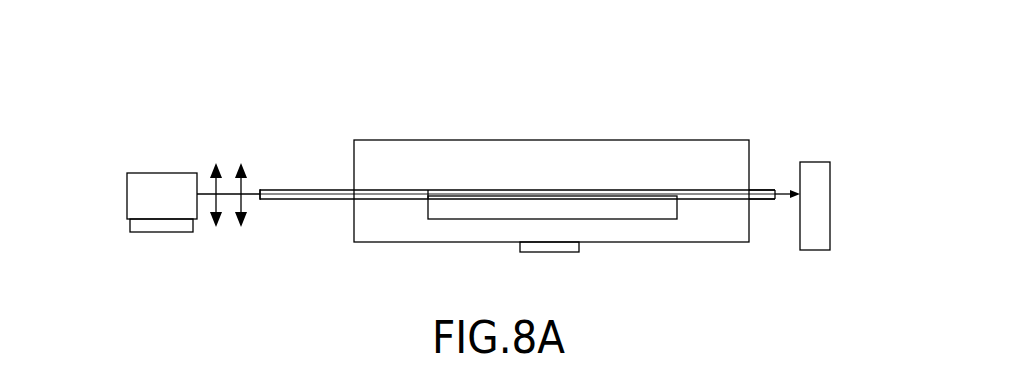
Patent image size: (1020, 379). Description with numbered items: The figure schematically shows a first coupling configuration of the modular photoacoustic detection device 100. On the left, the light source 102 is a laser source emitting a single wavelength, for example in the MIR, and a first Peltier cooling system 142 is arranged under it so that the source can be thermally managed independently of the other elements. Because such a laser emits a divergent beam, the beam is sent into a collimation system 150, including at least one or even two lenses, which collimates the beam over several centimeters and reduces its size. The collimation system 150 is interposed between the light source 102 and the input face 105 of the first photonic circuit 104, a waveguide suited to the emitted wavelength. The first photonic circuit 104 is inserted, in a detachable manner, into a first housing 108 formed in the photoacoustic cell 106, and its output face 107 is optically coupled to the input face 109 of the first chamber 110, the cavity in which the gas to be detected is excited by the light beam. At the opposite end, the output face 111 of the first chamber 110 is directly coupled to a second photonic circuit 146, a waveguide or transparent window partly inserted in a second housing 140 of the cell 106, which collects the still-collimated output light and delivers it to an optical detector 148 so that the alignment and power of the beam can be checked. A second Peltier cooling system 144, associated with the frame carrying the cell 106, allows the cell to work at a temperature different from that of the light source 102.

The modular photoacoustic detection device 100 is at (847, 125).
The light source 102 is at (134, 185).
The first photonic circuit 104 is at (313, 188).
The input face 105 is at (258, 188).
The photoacoustic cell 106 is at (576, 153).
The output face 107 is at (430, 196).
The first housing 108 is at (383, 185).
The input face of the first chamber 109 is at (431, 197).
The first chamber 110 is at (643, 202).
The output face of the first chamber 111 is at (671, 197).
The second housing 140 is at (720, 185).
The first Peltier cooling system 142 is at (134, 225).
The second Peltier cooling system 144 is at (521, 245).
The second photonic circuit 146 is at (755, 190).
The optical detector 148 is at (822, 178).
The collimation system 150 is at (230, 143).